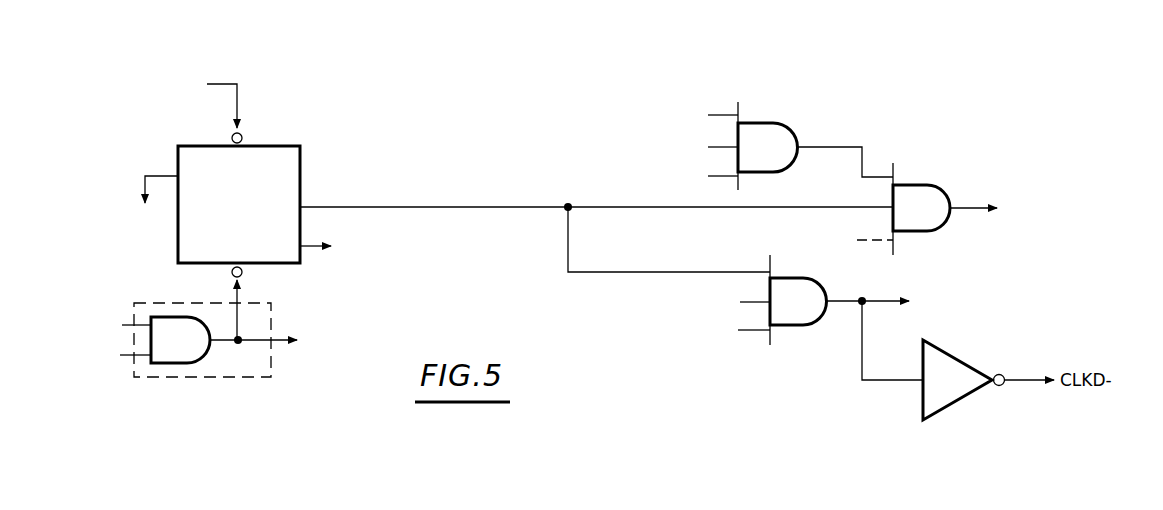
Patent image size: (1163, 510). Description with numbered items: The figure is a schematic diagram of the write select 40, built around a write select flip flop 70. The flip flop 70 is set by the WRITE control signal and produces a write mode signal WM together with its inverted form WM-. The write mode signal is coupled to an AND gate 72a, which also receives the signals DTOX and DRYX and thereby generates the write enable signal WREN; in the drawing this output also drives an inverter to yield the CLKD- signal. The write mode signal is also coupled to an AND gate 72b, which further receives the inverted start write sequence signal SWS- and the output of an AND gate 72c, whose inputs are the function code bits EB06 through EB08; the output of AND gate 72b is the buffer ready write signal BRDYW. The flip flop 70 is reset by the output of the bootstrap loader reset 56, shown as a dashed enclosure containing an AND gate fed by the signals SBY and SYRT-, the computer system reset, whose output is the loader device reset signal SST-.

The write select 40 is at (480, 104).
The write select flip flop 70 is at (290, 176).
The bootstrap loader reset 56 is at (272, 312).
The AND gate 72a is at (192, 350).
The AND gate 72b is at (935, 218).
The AND gate 72c is at (780, 157).